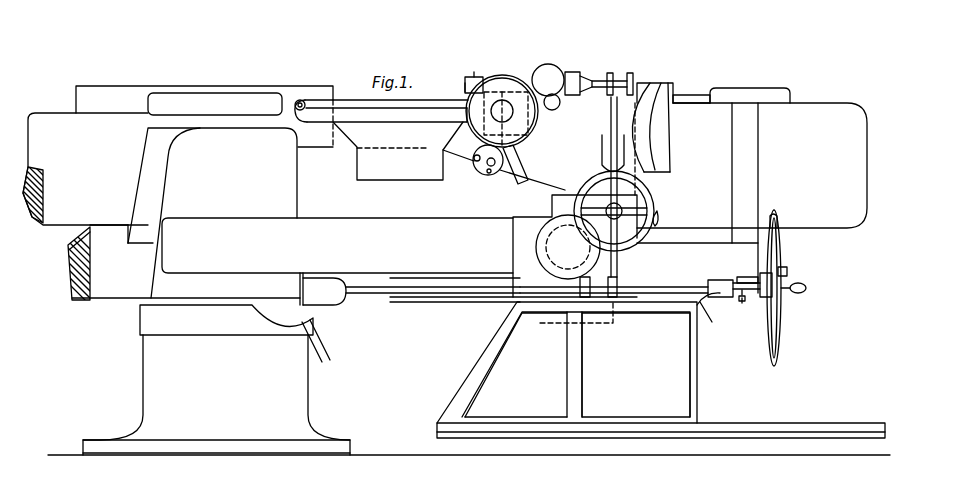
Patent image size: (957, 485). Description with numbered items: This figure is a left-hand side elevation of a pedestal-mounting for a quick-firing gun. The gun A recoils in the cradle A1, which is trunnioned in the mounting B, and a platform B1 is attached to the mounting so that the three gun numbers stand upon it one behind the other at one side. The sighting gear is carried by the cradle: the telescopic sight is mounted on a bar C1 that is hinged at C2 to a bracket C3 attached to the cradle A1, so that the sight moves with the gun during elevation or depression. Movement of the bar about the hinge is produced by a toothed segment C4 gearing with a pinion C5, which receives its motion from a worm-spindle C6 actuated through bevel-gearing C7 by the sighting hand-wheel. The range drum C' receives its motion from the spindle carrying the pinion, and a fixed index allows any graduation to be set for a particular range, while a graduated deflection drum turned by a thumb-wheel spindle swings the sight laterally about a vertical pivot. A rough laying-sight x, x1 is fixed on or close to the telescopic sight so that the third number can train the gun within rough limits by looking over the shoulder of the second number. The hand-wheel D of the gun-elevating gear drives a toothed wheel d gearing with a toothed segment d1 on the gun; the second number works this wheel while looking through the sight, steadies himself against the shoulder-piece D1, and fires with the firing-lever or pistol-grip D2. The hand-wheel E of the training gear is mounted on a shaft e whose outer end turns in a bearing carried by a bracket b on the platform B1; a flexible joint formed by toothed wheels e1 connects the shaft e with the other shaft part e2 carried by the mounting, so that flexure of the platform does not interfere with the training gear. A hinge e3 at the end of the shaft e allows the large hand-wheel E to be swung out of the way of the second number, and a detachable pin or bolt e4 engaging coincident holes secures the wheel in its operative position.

The gun A is at (79, 179).
The mounting B is at (187, 199).
The cradle A1 is at (269, 140).
The sight bar C1 is at (364, 101).
The hinge C2 is at (301, 111).
The graduated deflection drum C3 is at (560, 74).
The toothed segment C4 is at (514, 170).
The pinion C5 is at (474, 74).
The worm-spindle C6 is at (467, 113).
The bevel-gearing C7 is at (489, 175).
The range drum C' is at (504, 168).
The rough laying-sight x is at (464, 86).
The rough laying-sight x1 is at (590, 74).
The hand-wheel of the gun-elevating gear D is at (630, 238).
The shoulder-piece D1 is at (670, 128).
The firing-lever or pistol-grip D2 is at (653, 200).
The toothed wheel d is at (540, 247).
The toothed segment d1 is at (568, 247).
The training shaft e is at (655, 287).
The toothed wheels e1 is at (613, 299).
The training shaft part e2 is at (432, 294).
The hinge e3 is at (743, 301).
The detachable pin or bolt e4 is at (755, 278).
The bracket b is at (710, 316).
The hand-wheel of the training-gear E is at (778, 325).
The platform B1 is at (757, 423).